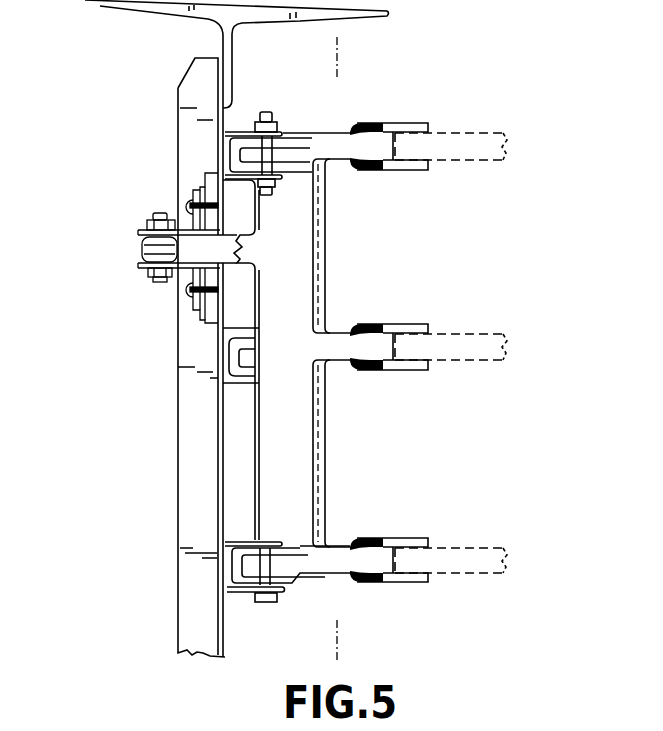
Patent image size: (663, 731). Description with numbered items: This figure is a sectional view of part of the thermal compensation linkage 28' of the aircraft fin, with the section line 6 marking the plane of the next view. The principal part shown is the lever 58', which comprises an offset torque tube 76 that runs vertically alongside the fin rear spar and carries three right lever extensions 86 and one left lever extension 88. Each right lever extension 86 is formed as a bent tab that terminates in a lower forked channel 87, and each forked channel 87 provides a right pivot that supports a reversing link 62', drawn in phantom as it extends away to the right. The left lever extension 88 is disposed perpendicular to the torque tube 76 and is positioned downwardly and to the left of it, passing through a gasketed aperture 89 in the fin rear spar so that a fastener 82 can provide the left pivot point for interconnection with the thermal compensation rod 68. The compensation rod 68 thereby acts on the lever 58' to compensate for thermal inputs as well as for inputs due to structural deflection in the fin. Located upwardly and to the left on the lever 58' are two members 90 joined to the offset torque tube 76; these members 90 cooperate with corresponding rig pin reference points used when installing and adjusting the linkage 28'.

The section line 6- 6 is at (302, 47).
The linkage 28' is at (146, 357).
The lever 58' is at (353, 360).
The reversing link 62' is at (459, 331).
The thermal compensation rod 68 is at (140, 250).
The offset torque tube 76 is at (308, 445).
The fastener 82 is at (160, 279).
The right lever extension 86 is at (345, 145).
The lower forked channel 87 is at (397, 173).
The left lever extension 88 is at (190, 252).
The gasketed aperture 89 is at (190, 220).
The rig pin reference member 90 is at (288, 140).